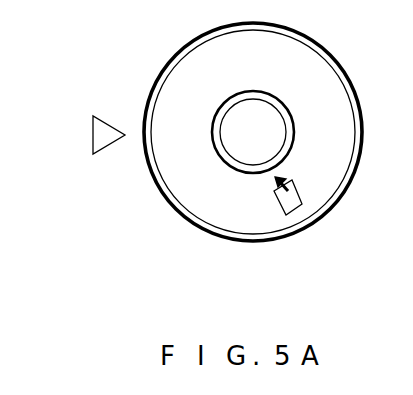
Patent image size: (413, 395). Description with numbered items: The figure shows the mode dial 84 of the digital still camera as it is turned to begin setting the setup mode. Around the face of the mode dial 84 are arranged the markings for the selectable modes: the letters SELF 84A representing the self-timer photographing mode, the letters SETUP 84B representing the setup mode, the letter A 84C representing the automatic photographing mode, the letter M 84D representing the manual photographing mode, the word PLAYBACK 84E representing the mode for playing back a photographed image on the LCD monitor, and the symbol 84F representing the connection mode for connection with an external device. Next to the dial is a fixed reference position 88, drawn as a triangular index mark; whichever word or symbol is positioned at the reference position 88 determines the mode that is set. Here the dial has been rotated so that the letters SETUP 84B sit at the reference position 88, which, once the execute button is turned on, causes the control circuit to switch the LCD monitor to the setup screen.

The mode dial 84 is at (351, 75).
The letters SELF 84A is at (172, 76).
The letters SETUP 84B is at (155, 125).
The letter A 84C is at (183, 175).
The letter M 84D is at (207, 208).
The word PLAYBACK 84E is at (239, 234).
The symbol 84F is at (297, 212).
The reference position 88 is at (92, 130).